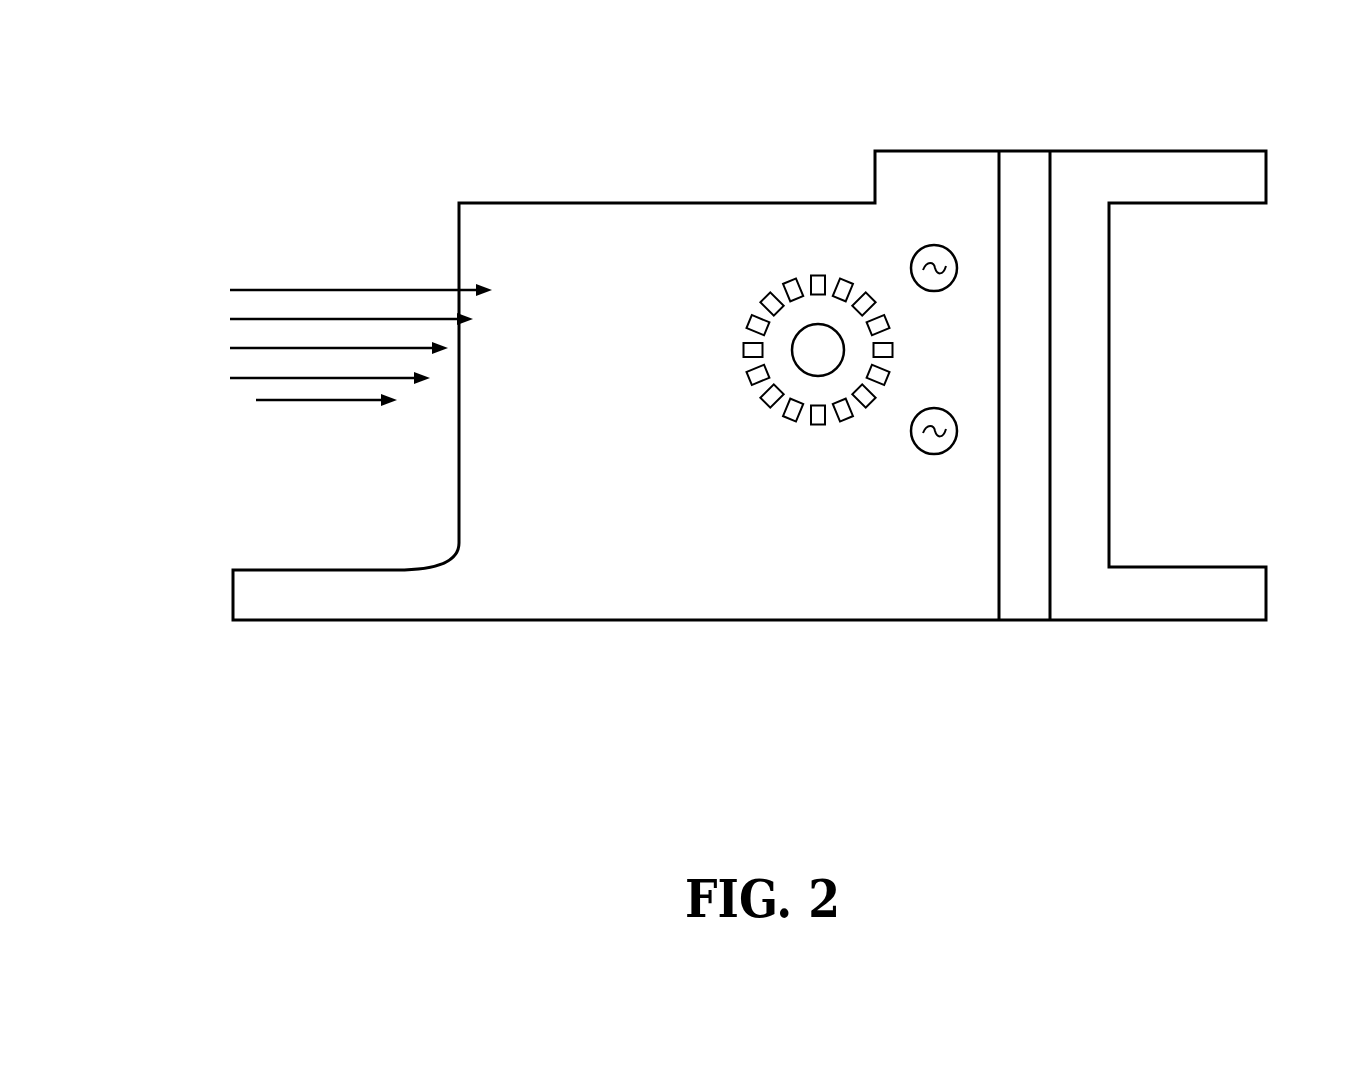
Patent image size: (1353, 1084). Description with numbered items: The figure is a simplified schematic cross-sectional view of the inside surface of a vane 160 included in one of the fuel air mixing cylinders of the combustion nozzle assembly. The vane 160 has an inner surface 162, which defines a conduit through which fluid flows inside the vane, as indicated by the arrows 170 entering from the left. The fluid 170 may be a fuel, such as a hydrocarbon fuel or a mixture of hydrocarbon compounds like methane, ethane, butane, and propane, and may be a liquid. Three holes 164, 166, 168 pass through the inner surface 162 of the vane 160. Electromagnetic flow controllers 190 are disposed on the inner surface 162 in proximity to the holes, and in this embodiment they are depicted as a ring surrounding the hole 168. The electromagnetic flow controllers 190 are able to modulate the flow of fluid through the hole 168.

The vane 160 is at (562, 578).
The inner surface 162 is at (755, 578).
The hole 164 is at (937, 262).
The hole 166 is at (937, 442).
The hole 168 is at (828, 336).
The fluid flow 170 is at (206, 287).
The electromagnetic flow controllers 190 is at (742, 352).